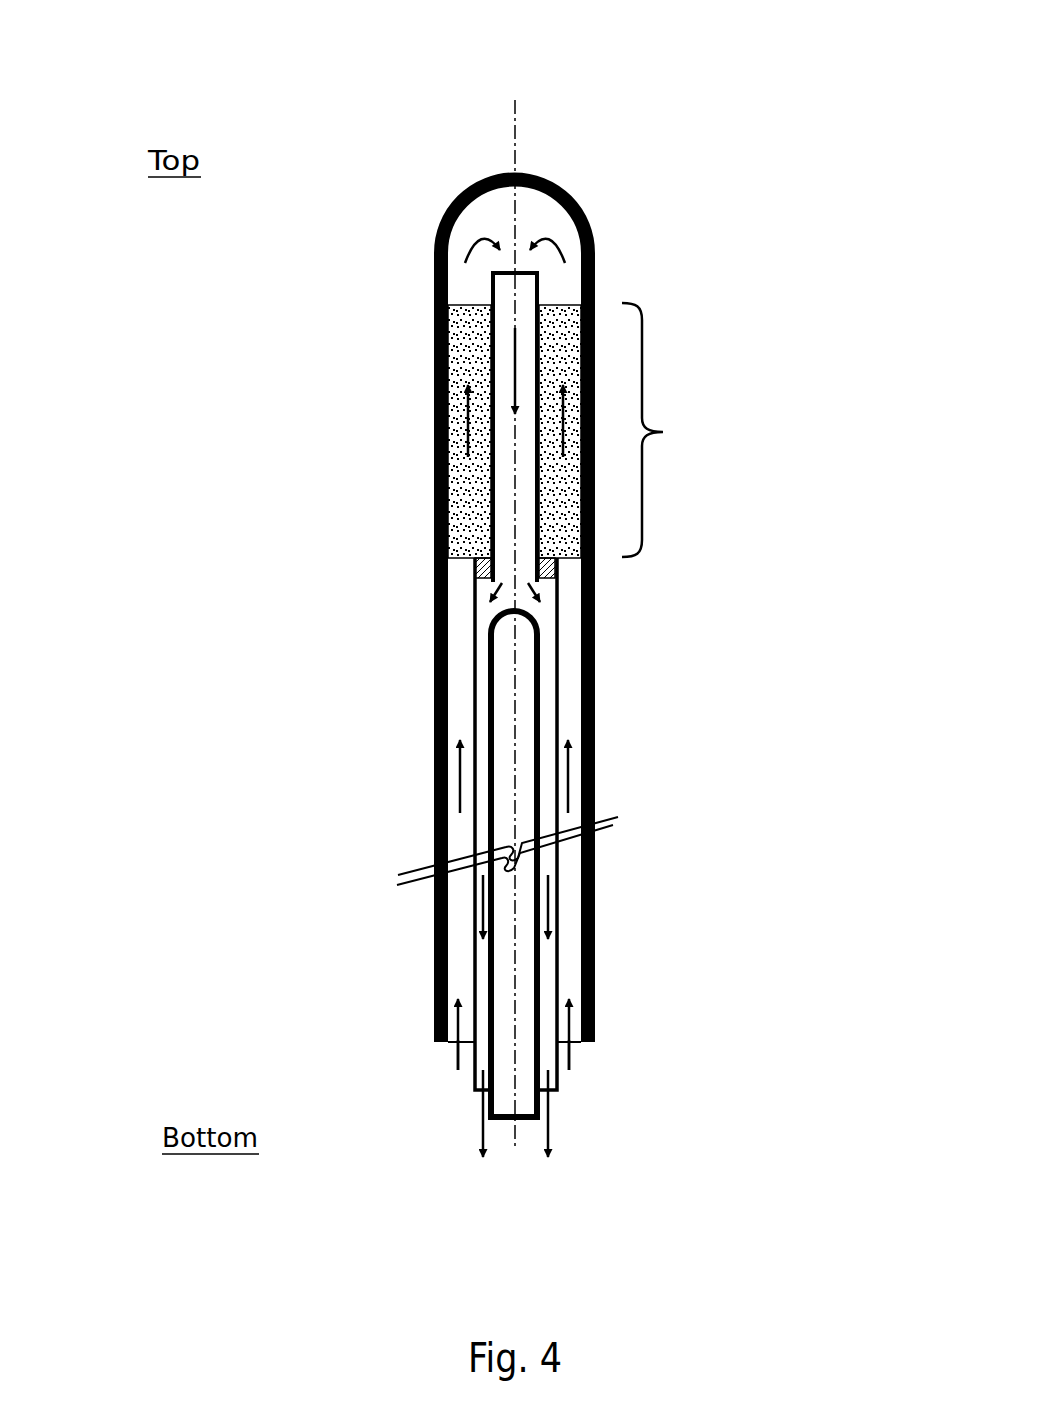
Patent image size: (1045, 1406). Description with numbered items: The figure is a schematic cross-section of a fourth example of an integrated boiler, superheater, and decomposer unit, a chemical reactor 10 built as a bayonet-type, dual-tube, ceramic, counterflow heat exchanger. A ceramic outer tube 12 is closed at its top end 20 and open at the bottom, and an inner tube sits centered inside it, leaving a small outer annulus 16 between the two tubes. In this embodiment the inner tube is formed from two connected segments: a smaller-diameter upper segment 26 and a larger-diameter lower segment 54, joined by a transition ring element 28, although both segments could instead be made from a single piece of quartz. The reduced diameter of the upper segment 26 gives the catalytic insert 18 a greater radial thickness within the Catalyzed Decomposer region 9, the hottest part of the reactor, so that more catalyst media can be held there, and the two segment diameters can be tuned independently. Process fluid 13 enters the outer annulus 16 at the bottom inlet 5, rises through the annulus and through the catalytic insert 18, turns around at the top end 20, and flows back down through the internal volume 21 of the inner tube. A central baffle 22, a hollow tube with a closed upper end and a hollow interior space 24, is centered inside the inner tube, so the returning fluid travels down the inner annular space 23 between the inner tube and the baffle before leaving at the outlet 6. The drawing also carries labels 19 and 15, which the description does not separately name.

The chemical reactor 10 is at (350, 46).
The top end 20 is at (571, 184).
The top chamber 19 is at (490, 213).
The upper segment 26 is at (545, 285).
The catalyst bed 15 is at (503, 362).
The catalytic insert 18 is at (437, 478).
The internal volume 21 is at (528, 498).
The transition ring element 28 is at (475, 568).
The central baffle 22 is at (540, 663).
The lower segment 54 is at (561, 712).
The outer annulus 16 is at (457, 678).
The process fluid 13 is at (456, 780).
The hollow interior space 24 is at (528, 781).
The outer tube 12 is at (600, 928).
The inner annular space 23 is at (480, 956).
The Catalyzed Decomposer region 9 is at (735, 430).
The bottom inlet 5 is at (517, 1074).
The outlet 6 is at (517, 1136).